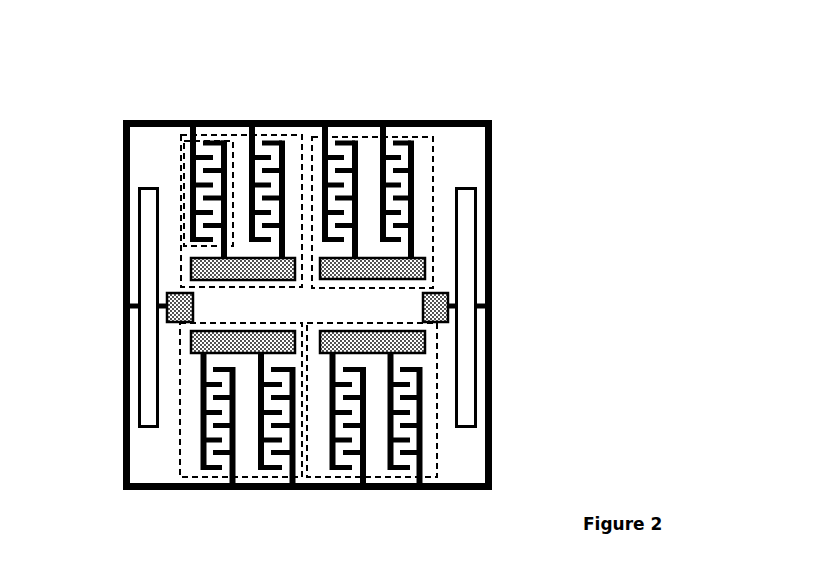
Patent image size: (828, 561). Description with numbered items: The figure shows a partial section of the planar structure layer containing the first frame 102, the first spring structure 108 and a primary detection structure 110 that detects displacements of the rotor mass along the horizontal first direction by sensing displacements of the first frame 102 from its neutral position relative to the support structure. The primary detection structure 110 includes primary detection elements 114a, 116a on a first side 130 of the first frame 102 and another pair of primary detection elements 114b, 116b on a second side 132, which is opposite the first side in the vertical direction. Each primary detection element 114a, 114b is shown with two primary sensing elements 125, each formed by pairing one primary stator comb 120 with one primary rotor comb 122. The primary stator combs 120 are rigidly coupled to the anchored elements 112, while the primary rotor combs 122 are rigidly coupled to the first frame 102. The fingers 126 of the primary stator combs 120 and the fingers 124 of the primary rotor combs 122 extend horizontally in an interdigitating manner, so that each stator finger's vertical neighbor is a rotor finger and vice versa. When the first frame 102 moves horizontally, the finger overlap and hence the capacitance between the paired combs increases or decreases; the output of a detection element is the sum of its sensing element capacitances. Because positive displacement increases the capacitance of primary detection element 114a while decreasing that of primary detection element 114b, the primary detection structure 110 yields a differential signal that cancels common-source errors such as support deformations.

The first frame 102 is at (493, 188).
The first spring structure 108 is at (478, 305).
The primary detection structure 110 is at (396, 130).
The anchored elements 112 is at (417, 257).
The primary detection element 114a is at (174, 156).
The primary detection element 114b is at (197, 447).
The primary detection element 116a is at (423, 160).
The primary detection element 116b is at (310, 455).
The primary stator comb 120 is at (215, 120).
The primary rotor comb 122 is at (180, 120).
The fingers of the primary rotor combs 124 is at (215, 143).
The primary sensing element 125 is at (199, 243).
The fingers of the primary stator combs 126 is at (213, 197).
The first side 130 is at (437, 118).
The second side 132 is at (392, 490).